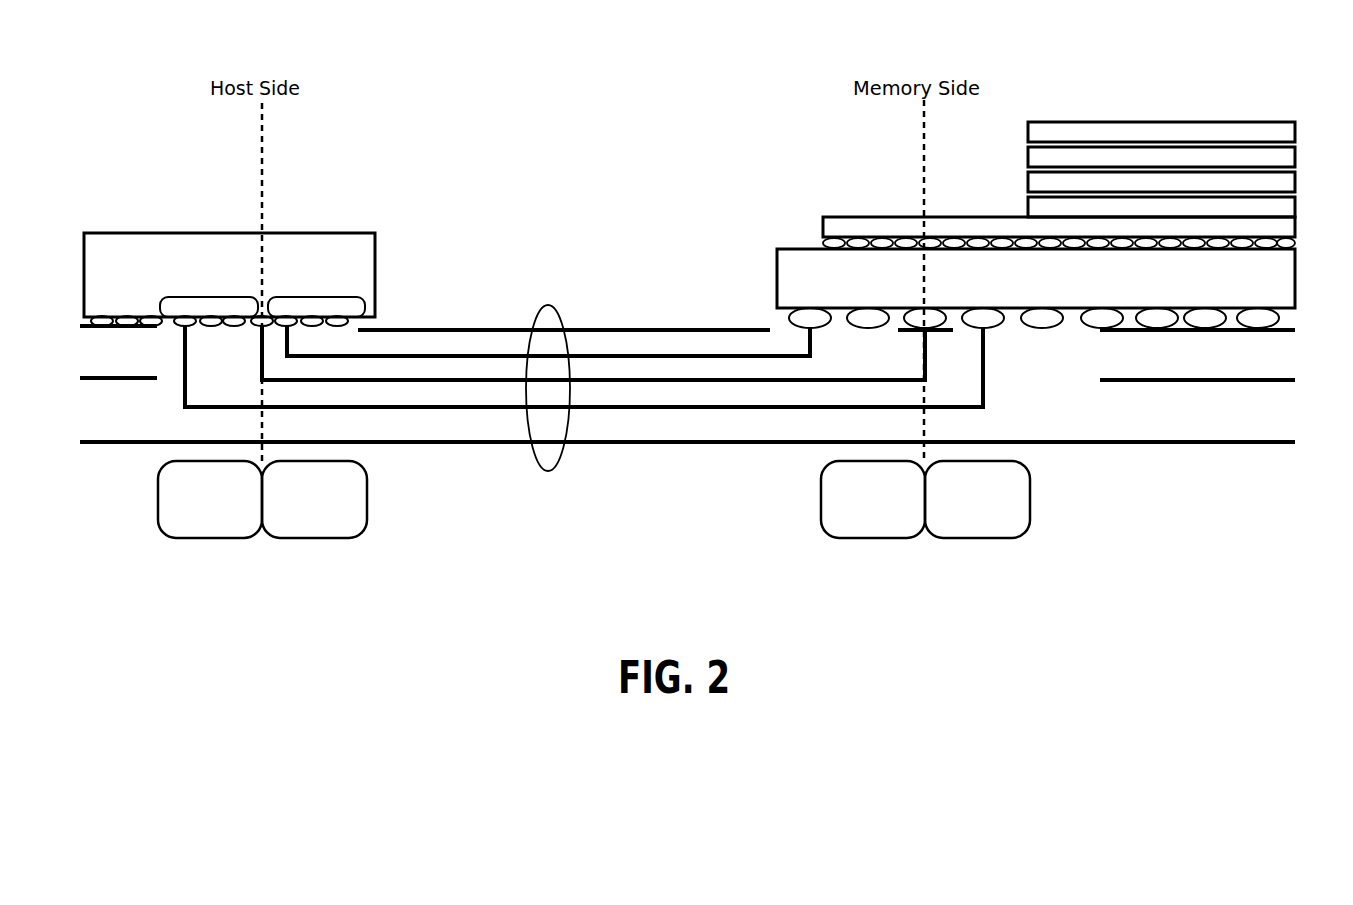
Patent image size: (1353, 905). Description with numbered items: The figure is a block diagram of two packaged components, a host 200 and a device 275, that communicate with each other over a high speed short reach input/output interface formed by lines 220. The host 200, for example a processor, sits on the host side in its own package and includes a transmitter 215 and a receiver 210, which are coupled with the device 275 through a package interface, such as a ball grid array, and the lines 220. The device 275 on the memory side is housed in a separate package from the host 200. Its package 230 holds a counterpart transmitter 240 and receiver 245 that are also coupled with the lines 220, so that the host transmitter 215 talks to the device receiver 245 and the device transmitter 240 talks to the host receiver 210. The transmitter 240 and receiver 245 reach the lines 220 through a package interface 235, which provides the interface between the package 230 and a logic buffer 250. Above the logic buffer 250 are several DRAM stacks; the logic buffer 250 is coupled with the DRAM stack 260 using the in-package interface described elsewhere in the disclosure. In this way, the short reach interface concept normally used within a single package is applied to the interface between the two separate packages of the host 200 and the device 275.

The host 200 is at (357, 203).
The receiver 210 is at (315, 540).
The transmitter 215 is at (210, 540).
The lines 220 is at (547, 303).
The package 230 is at (776, 262).
The package interface 235 is at (822, 241).
The transmitter 240 is at (873, 540).
The receiver 245 is at (978, 540).
The logic buffer 250 is at (1020, 232).
The DRAM stack 260 is at (1022, 120).
The device 275 is at (1290, 55).